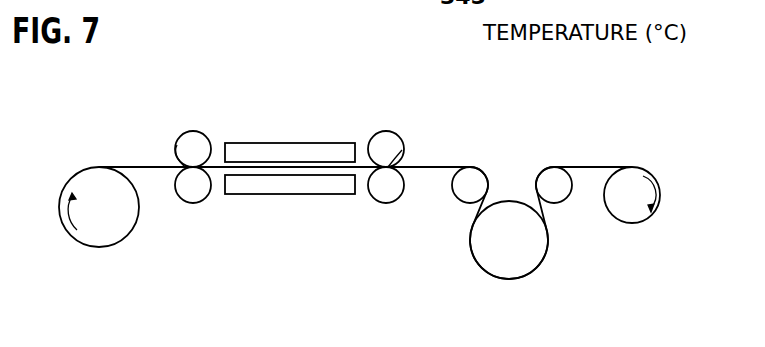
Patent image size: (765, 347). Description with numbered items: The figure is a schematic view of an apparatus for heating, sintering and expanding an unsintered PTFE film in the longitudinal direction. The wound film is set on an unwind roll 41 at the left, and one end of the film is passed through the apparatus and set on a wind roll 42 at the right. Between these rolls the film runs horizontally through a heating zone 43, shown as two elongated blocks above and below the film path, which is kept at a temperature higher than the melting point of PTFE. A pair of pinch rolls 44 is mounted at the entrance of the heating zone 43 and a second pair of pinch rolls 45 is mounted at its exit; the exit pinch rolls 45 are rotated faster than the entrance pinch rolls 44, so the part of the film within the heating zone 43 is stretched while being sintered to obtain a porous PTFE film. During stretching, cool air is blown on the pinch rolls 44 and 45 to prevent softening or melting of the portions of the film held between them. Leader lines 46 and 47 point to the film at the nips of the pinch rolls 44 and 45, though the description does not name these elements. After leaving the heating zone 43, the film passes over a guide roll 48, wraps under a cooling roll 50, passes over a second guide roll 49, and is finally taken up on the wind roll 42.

The unwind roll 41 is at (95, 235).
The wind roll 42 is at (633, 213).
The heating zone 43 is at (257, 150).
The pinch rolls 44 is at (192, 132).
The pinch rolls 45 is at (387, 132).
The film web 46 is at (177, 147).
The treated film 47 is at (402, 150).
The guide roll 48 is at (463, 190).
The guide roll 49 is at (557, 178).
The cooling roll 50 is at (512, 267).